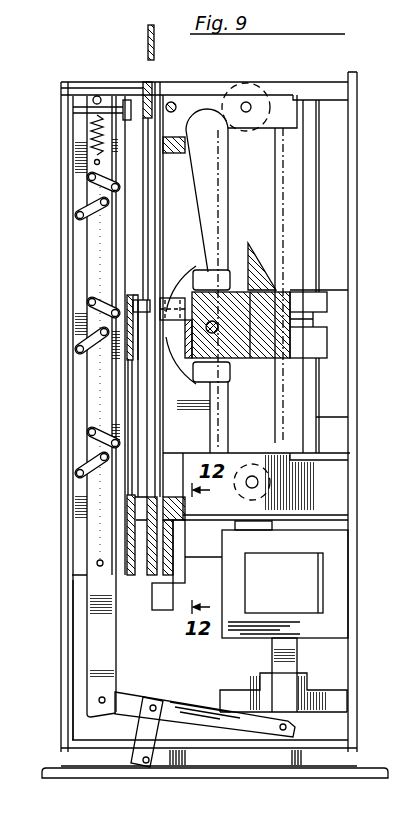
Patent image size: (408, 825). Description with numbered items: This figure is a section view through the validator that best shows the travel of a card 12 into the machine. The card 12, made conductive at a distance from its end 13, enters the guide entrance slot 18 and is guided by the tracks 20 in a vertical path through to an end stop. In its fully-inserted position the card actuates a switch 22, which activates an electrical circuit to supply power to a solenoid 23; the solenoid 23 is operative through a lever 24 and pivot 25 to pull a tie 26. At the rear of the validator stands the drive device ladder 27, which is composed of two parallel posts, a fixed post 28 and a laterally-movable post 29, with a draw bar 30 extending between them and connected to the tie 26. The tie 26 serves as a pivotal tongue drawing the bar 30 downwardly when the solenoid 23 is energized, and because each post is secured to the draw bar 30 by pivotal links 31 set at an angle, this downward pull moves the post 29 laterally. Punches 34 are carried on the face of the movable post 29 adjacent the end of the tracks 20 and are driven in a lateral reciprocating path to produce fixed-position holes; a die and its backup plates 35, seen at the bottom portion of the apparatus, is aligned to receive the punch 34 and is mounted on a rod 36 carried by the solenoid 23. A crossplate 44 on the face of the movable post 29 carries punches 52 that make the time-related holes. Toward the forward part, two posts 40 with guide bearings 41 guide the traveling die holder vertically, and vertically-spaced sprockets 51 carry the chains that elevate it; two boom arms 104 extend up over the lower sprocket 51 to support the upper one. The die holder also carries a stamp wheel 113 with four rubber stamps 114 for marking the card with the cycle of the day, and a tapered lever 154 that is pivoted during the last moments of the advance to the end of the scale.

The card 12 is at (148, 28).
The end 13 is at (150, 60).
The guide entrance slot 18 is at (158, 90).
The tracks 20 is at (165, 132).
The switch 22 is at (167, 609).
The solenoid 23 is at (320, 595).
The lever 24 is at (196, 697).
The pivot 25 is at (159, 697).
The tie 26 is at (110, 658).
The drive device ladder 27 is at (102, 396).
The fixed post 28 is at (78, 261).
The laterally-movable post 29 is at (110, 283).
The draw bar 30 is at (97, 416).
The pivotal links 31 is at (82, 337).
The punches 34 is at (137, 523).
The die and backup plates 35 is at (175, 495).
The rod 36 is at (208, 563).
The posts 40 is at (320, 412).
The guide bearings 41 is at (328, 296).
The crossplate 44 is at (130, 352).
The sprockets 51 is at (262, 84).
The punches 52 is at (143, 300).
The boom arms 104 is at (185, 192).
The stamp wheel 113 is at (238, 362).
The rubber stamps 114 is at (208, 272).
The tapered lever 154 is at (250, 254).